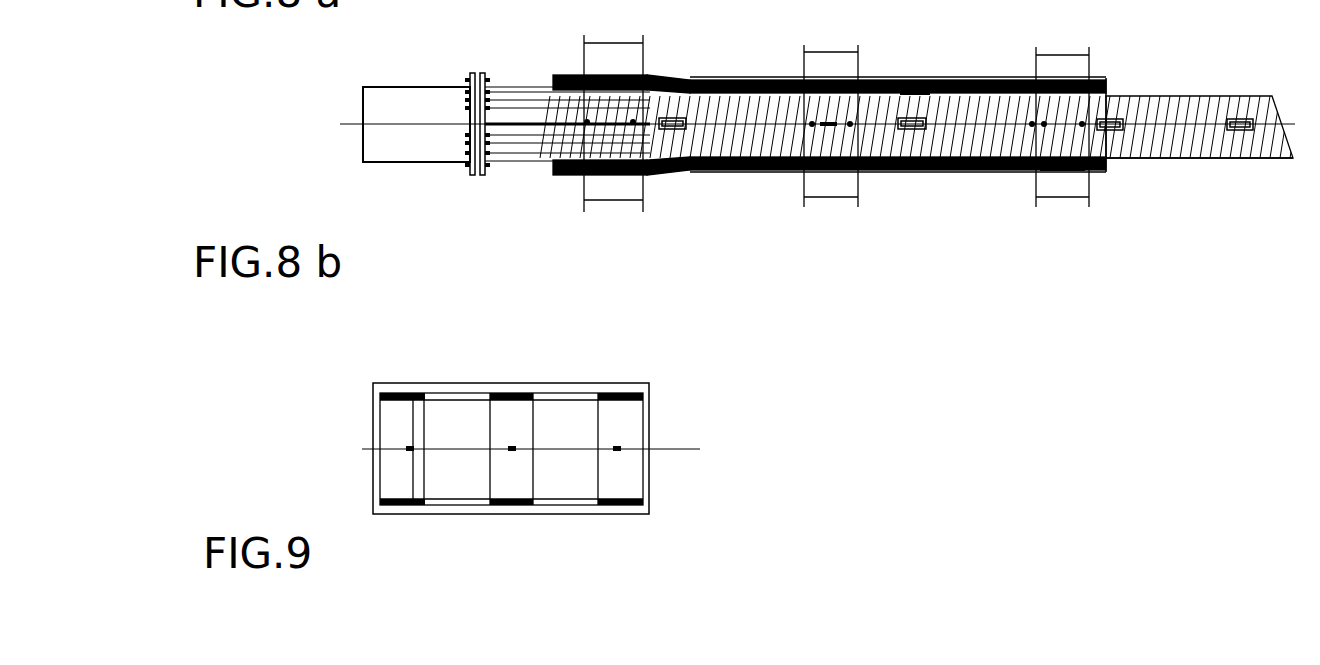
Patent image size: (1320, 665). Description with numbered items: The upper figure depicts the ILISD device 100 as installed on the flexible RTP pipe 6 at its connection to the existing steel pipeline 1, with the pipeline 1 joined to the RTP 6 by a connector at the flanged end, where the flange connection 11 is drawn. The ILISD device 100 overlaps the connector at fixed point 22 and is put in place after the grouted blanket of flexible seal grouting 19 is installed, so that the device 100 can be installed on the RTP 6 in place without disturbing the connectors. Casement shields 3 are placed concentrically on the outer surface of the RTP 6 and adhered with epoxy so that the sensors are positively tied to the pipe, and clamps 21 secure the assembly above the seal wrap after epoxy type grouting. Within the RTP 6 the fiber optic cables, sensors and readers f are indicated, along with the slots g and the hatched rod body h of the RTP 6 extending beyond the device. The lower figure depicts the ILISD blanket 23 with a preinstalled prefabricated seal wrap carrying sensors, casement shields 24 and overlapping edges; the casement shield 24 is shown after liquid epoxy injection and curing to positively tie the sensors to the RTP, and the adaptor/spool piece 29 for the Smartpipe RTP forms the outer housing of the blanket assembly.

In FIG. 8b, the steel pipeline 1 is at (414, 87).
In FIG. 8b, the flange connection 11 is at (480, 175).
In FIG. 8b, the fixed point 22 is at (612, 75).
In FIG. 8b, the casement shields 3 is at (843, 78).
In FIG. 8b, the fiber optic cables, sensors and readers f is at (834, 118).
In FIG. 8b, the flexible seal grouting 19 is at (927, 83).
In FIG. 8b, the flexible RTP pipe 6 is at (1165, 97).
In FIG. 8b, the slot g is at (1112, 131).
In FIG. 8b, the rod body h is at (1183, 160).
In FIG. 8b, the ILISD device 100 is at (737, 170).
In FIG. 8b, the clamps 21 is at (1060, 173).
In FIG. 9, the adaptor/spool piece 29 is at (410, 385).
In FIG. 9, the casement shields 24 is at (380, 462).
In FIG. 9, the ILISD blanket 23 is at (543, 512).